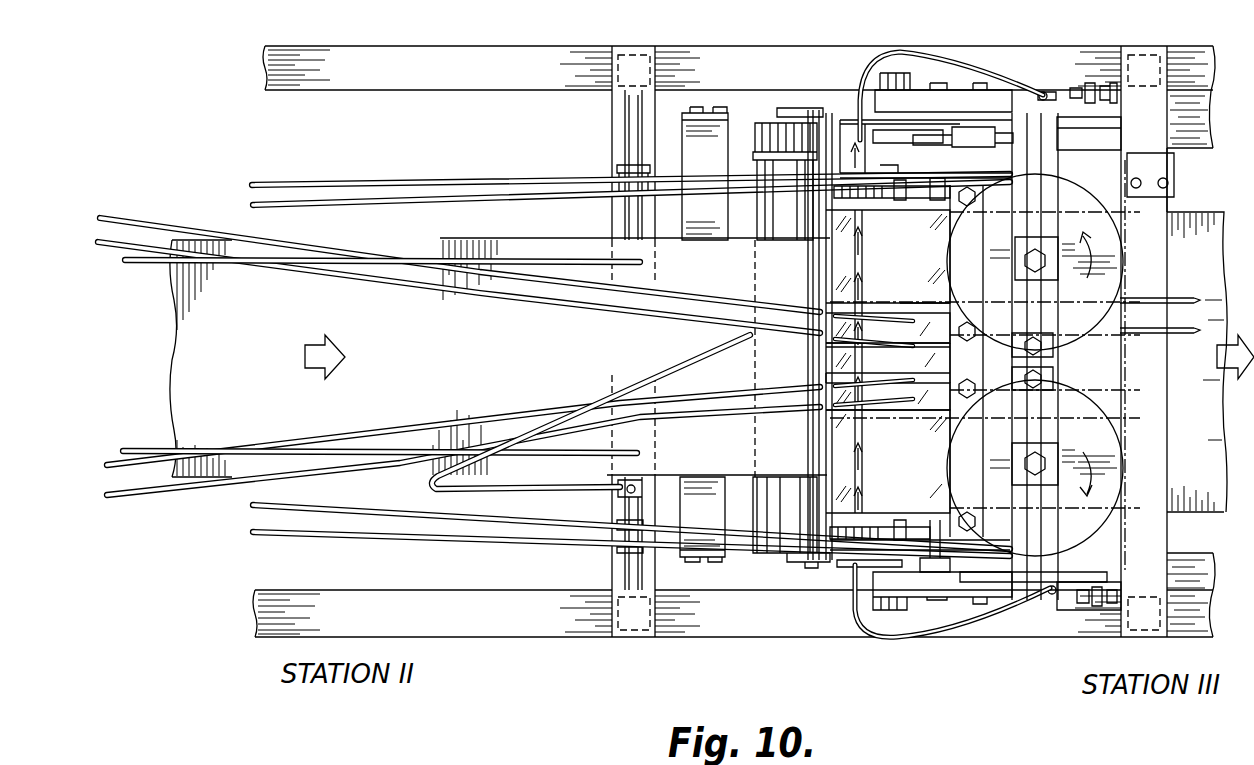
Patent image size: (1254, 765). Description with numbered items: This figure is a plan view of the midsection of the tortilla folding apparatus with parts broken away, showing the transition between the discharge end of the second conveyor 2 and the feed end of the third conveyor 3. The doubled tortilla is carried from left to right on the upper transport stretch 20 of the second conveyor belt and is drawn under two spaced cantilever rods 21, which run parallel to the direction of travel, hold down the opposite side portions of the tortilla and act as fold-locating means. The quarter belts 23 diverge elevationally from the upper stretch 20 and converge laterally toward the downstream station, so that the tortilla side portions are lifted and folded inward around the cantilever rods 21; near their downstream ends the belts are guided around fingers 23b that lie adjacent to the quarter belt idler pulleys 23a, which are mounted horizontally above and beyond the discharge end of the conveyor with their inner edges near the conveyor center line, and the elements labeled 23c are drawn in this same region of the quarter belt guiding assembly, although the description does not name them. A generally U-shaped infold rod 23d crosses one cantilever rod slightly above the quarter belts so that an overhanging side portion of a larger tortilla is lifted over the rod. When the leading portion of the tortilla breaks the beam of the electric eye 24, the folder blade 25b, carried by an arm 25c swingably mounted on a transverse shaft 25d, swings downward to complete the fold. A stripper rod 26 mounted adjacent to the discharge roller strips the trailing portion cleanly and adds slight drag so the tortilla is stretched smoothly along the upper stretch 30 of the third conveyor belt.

The second conveyor 2 is at (198, 210).
The third conveyor 3 is at (1192, 208).
The upper transport stretch of the second conveyor belt 20 is at (172, 380).
The cantilever rods 21 is at (552, 256).
The quarter belts 23 is at (429, 186).
The quarter belt idler pulleys 23a is at (1072, 406).
The fingers 23b is at (920, 376).
The wire end holders 23c is at (926, 323).
The infold rod 23d is at (670, 372).
The electric eye 24 is at (928, 637).
The folder blade 25b is at (830, 255).
The arm 25c is at (922, 250).
The shaft 25d is at (944, 160).
The stripper rod 26 is at (837, 133).
The upper transport stretch of the third conveyor belt 30 is at (1193, 512).